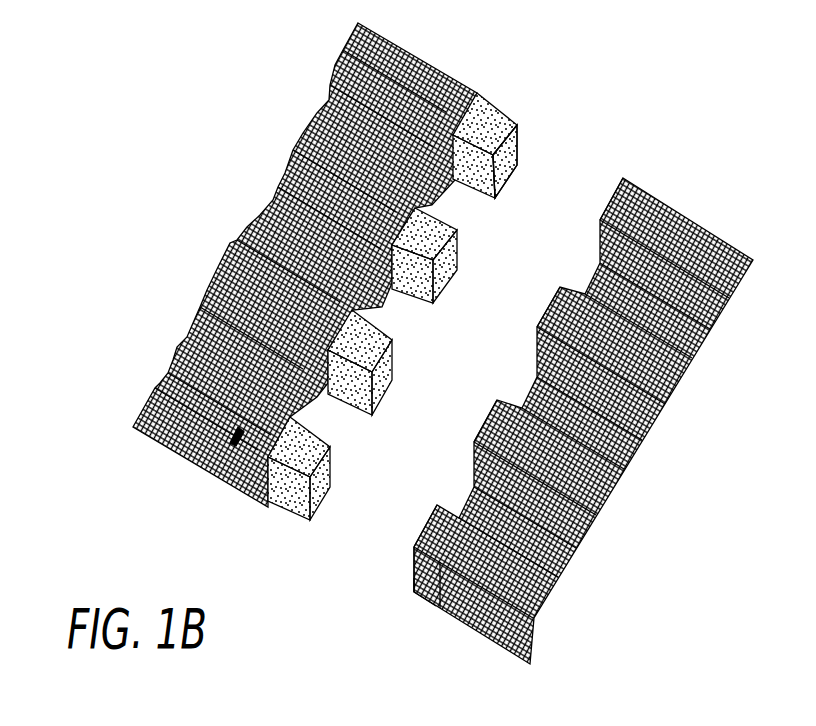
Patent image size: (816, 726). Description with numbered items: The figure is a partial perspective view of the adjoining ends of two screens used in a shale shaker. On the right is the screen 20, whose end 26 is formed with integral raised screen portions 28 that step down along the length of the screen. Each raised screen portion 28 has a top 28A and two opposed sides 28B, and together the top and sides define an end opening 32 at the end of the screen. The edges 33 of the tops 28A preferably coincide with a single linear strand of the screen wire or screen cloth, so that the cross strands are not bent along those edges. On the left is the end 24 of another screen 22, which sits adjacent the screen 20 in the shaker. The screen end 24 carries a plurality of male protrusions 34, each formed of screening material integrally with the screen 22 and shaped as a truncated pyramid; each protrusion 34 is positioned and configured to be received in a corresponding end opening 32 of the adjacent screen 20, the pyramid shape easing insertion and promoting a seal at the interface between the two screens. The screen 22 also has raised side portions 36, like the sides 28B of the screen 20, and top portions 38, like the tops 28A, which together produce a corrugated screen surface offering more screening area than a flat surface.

The screen 20 is at (457, 599).
The another screen 22 is at (234, 437).
The end of screen 24 is at (477, 95).
The end of screen 26 is at (413, 594).
The raised screen portion 28 is at (727, 274).
The top 28A is at (545, 590).
The opposed side 28B is at (420, 573).
The end opening 32 is at (623, 180).
The edge 33 is at (717, 318).
The male protrusion 34 is at (509, 155).
The raised side portion 36 is at (335, 96).
The top portion 38 is at (355, 47).